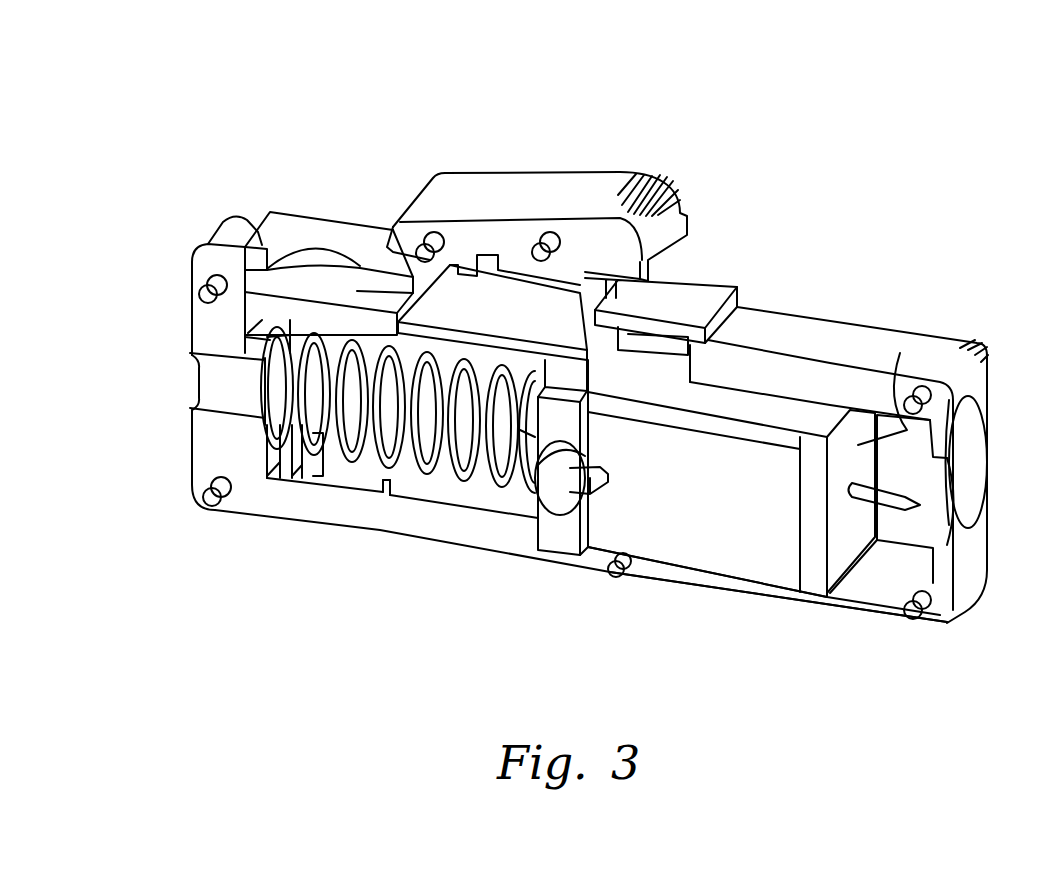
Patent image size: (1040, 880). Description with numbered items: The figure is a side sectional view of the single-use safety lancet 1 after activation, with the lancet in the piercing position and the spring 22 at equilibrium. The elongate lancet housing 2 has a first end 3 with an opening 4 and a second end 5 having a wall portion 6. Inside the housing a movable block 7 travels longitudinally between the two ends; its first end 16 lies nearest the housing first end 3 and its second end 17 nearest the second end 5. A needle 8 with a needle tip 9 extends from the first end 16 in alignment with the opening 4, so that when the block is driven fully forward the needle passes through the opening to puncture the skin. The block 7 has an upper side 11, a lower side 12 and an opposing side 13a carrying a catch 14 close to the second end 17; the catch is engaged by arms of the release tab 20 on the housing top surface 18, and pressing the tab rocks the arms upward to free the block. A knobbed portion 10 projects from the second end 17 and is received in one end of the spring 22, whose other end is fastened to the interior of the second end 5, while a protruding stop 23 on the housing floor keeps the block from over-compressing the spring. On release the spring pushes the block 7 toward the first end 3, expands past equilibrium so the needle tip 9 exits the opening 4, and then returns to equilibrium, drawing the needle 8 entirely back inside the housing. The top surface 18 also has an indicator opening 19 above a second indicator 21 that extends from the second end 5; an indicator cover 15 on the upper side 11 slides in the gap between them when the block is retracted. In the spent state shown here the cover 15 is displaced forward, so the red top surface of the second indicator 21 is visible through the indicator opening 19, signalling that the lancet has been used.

The safety lancet 1 is at (637, 103).
The lancet housing 2 is at (862, 347).
The first end 3 is at (967, 437).
The opening 4 is at (950, 505).
The second end 5 is at (208, 333).
The wall portion 6 is at (267, 339).
The movable block 7 is at (653, 478).
The needle 8 is at (893, 495).
The needle tip 9 is at (945, 505).
The knobbed portion 10 is at (492, 450).
The upper side 11 is at (657, 383).
The lower side 12 is at (700, 567).
The opposing side 13a is at (760, 527).
The catch 14 is at (563, 500).
The indicator cover 15 is at (562, 333).
The first end 16 is at (858, 445).
The second end 17 is at (527, 440).
The top surface 18 is at (293, 227).
The indicator opening 19 is at (332, 253).
The release tab 20 is at (620, 197).
The second indicator 21 is at (290, 283).
The spring 22 is at (320, 460).
The protruding stop 23 is at (382, 480).